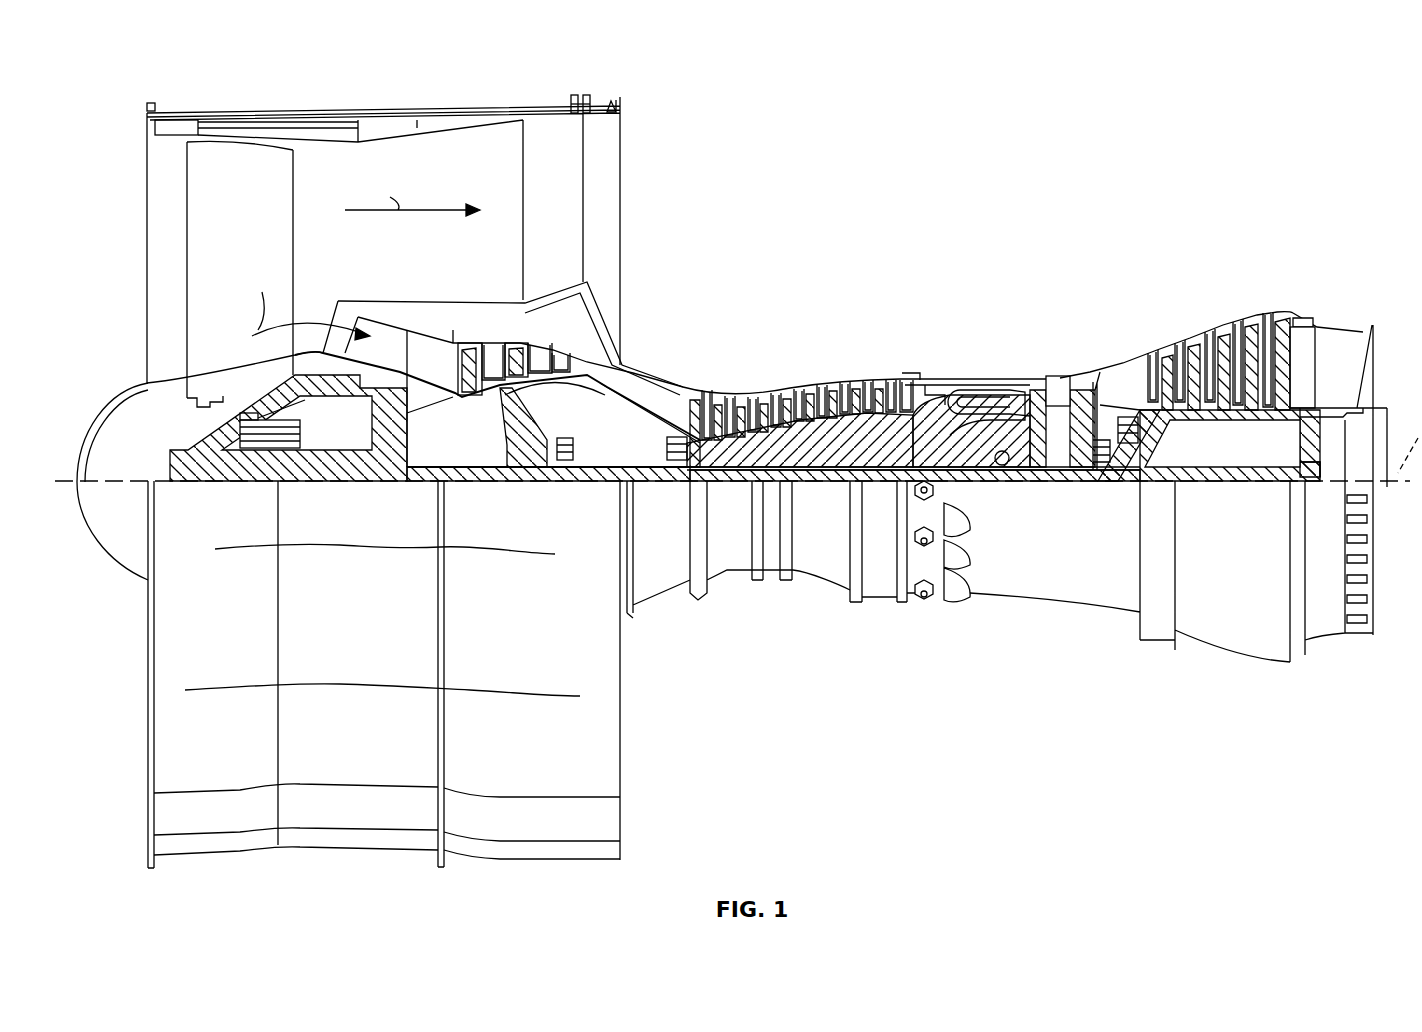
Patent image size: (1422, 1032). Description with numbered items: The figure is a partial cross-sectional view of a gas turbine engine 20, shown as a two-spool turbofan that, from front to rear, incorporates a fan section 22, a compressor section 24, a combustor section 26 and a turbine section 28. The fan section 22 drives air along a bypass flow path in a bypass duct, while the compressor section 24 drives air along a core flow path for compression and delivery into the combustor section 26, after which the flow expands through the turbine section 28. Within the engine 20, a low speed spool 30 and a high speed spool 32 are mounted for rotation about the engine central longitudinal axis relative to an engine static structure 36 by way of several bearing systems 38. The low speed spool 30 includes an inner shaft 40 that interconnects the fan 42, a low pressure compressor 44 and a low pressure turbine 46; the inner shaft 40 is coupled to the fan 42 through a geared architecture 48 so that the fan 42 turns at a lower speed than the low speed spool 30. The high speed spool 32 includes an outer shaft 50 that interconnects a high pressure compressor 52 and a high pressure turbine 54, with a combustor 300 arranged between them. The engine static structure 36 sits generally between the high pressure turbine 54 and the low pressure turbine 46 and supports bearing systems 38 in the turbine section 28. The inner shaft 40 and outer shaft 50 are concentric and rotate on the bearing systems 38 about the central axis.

The gas turbine engine 20 is at (1274, 160).
The fan section 22 is at (257, 103).
The compressor section 24 is at (820, 317).
The combustor section 26 is at (1003, 317).
The turbine section 28 is at (1139, 309).
The low speed spool 30 is at (846, 490).
The high speed spool 32 is at (903, 430).
The engine static structure 36 is at (879, 605).
The bearing systems 38 is at (250, 437).
The inner shaft 40 is at (645, 487).
The fan 42 is at (237, 241).
The low pressure compressor 44 is at (535, 352).
The low pressure turbine 46 is at (1235, 335).
The geared architecture 48 is at (380, 462).
The outer shaft 50 is at (1005, 462).
The high pressure compressor 52 is at (800, 403).
The high pressure turbine 54 is at (1062, 375).
The combustor 300 is at (965, 400).